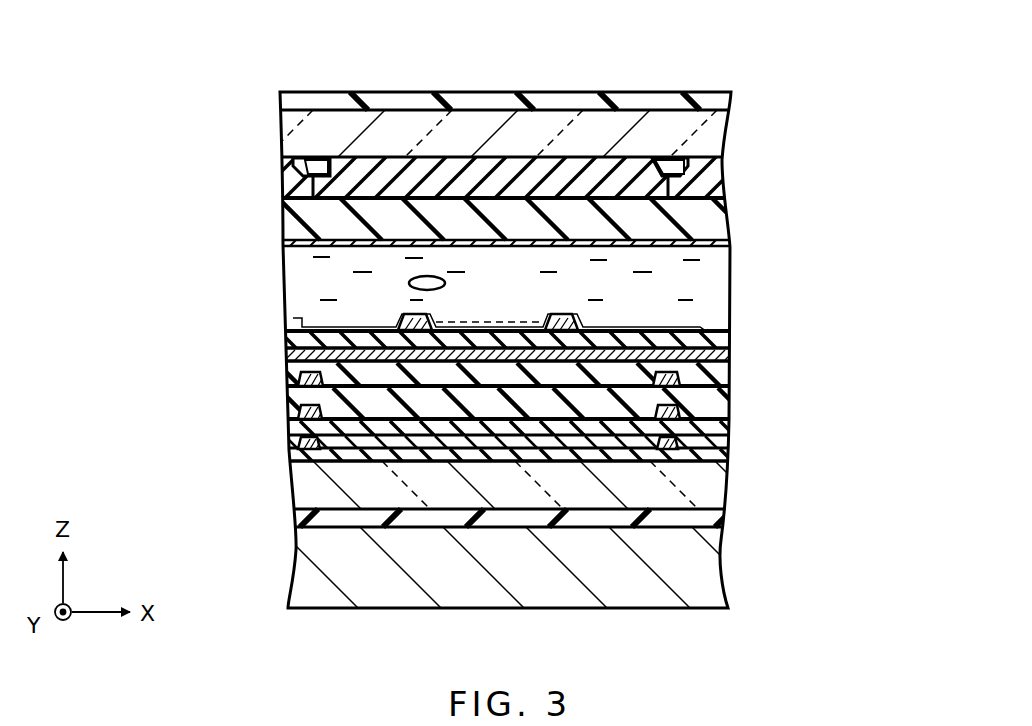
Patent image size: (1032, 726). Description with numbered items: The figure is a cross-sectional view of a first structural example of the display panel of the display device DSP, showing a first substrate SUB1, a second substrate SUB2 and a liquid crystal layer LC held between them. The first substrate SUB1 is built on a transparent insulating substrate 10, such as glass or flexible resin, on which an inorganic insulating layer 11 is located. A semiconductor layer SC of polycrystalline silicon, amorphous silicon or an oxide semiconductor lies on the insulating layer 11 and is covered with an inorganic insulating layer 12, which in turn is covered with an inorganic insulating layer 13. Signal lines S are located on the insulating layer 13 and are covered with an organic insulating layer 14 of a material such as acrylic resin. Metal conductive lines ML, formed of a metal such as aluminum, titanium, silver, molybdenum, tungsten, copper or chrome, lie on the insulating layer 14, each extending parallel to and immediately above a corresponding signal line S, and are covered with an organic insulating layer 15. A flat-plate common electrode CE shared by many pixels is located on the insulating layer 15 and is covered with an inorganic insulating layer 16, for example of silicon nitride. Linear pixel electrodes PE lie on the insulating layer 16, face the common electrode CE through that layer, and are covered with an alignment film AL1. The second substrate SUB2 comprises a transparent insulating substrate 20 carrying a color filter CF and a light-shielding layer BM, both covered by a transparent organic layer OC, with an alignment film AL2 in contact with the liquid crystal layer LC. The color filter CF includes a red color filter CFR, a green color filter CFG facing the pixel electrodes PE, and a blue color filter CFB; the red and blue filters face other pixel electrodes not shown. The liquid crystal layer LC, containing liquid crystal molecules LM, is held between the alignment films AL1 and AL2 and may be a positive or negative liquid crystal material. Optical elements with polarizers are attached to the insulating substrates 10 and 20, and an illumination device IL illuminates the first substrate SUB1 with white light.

The red color filter CFR is at (298, 180).
The light-shielding layer BM is at (318, 170).
The green color filter CFG is at (507, 172).
The blue color filter CFB is at (712, 170).
The display device DSP is at (731, 83).
The insulating substrate 20 is at (713, 134).
The second substrate SUB2 is at (737, 172).
The color filter CF is at (283, 185).
The transparent layer OC is at (718, 215).
The alignment film AL2 is at (718, 246).
The liquid crystal layer LC is at (710, 287).
The liquid crystal molecules LM is at (409, 283).
The pixel electrode PE is at (546, 316).
The alignment film AL1 is at (710, 326).
The insulating layer 16 is at (712, 342).
The common electrode CE is at (300, 355).
The insulating layer 15 is at (708, 378).
The first substrate SUB1 is at (737, 392).
The insulating layer 14 is at (720, 405).
The insulating layer 13 is at (718, 431).
The insulating layer 12 is at (720, 445).
The insulating layer 11 is at (720, 457).
The insulating substrate 10 is at (720, 508).
The metal conductive line ML is at (665, 372).
The signal line S is at (316, 412).
The semiconductor layer SC is at (310, 444).
The illumination device IL is at (685, 597).